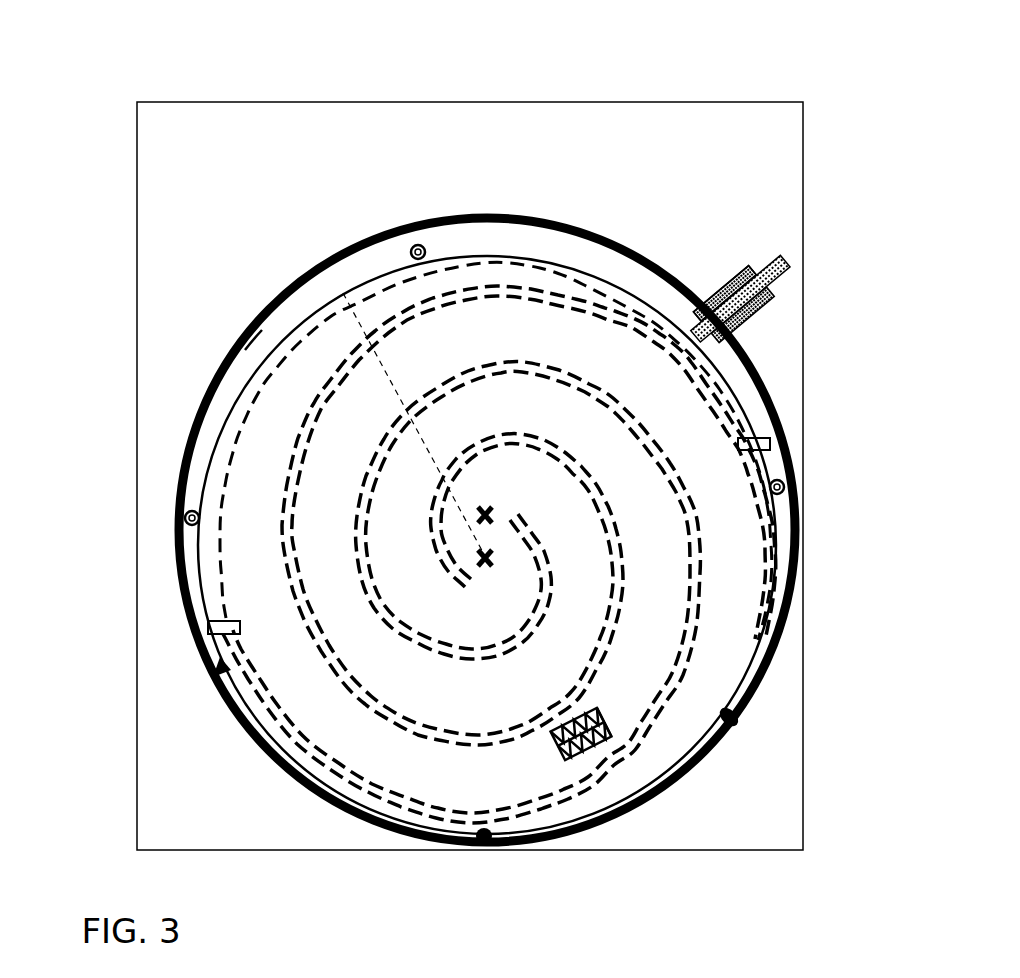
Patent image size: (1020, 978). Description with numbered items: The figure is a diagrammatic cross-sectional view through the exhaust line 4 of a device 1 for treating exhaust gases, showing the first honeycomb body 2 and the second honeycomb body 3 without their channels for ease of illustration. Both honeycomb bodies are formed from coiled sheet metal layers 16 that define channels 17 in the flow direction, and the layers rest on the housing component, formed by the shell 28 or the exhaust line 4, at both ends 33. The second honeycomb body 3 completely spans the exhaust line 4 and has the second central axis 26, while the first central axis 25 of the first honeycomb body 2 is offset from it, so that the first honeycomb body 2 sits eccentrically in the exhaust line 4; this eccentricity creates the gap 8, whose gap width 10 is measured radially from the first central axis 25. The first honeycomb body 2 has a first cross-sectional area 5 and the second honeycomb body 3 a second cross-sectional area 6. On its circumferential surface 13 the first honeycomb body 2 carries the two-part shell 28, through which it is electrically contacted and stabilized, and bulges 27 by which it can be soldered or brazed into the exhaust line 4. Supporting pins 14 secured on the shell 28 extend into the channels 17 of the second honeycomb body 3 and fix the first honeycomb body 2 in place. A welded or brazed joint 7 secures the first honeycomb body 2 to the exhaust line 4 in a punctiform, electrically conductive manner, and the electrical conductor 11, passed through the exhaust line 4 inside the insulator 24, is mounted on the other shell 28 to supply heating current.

The device 1 is at (146, 165).
The first honeycomb body 2 is at (593, 313).
The second honeycomb body 3 is at (508, 245).
The exhaust line 4 is at (284, 292).
The first cross-sectional area 5 is at (186, 580).
The second cross-sectional area 6 is at (206, 633).
The welded joint 7 is at (486, 828).
The gap 8 is at (262, 347).
The gap width 10 is at (342, 289).
The electrical conductor 11 is at (793, 260).
The circumferential surface 13 is at (727, 383).
The supporting pins 14 is at (416, 244).
The sheet metal layers 16 is at (567, 762).
The channels 17 is at (607, 748).
The insulator 24 is at (724, 294).
The first central axis 25 is at (488, 555).
The second central axis 26 is at (486, 512).
The bulges 27 is at (735, 717).
The two-part shell 28 is at (775, 600).
The ends 33 is at (661, 320).